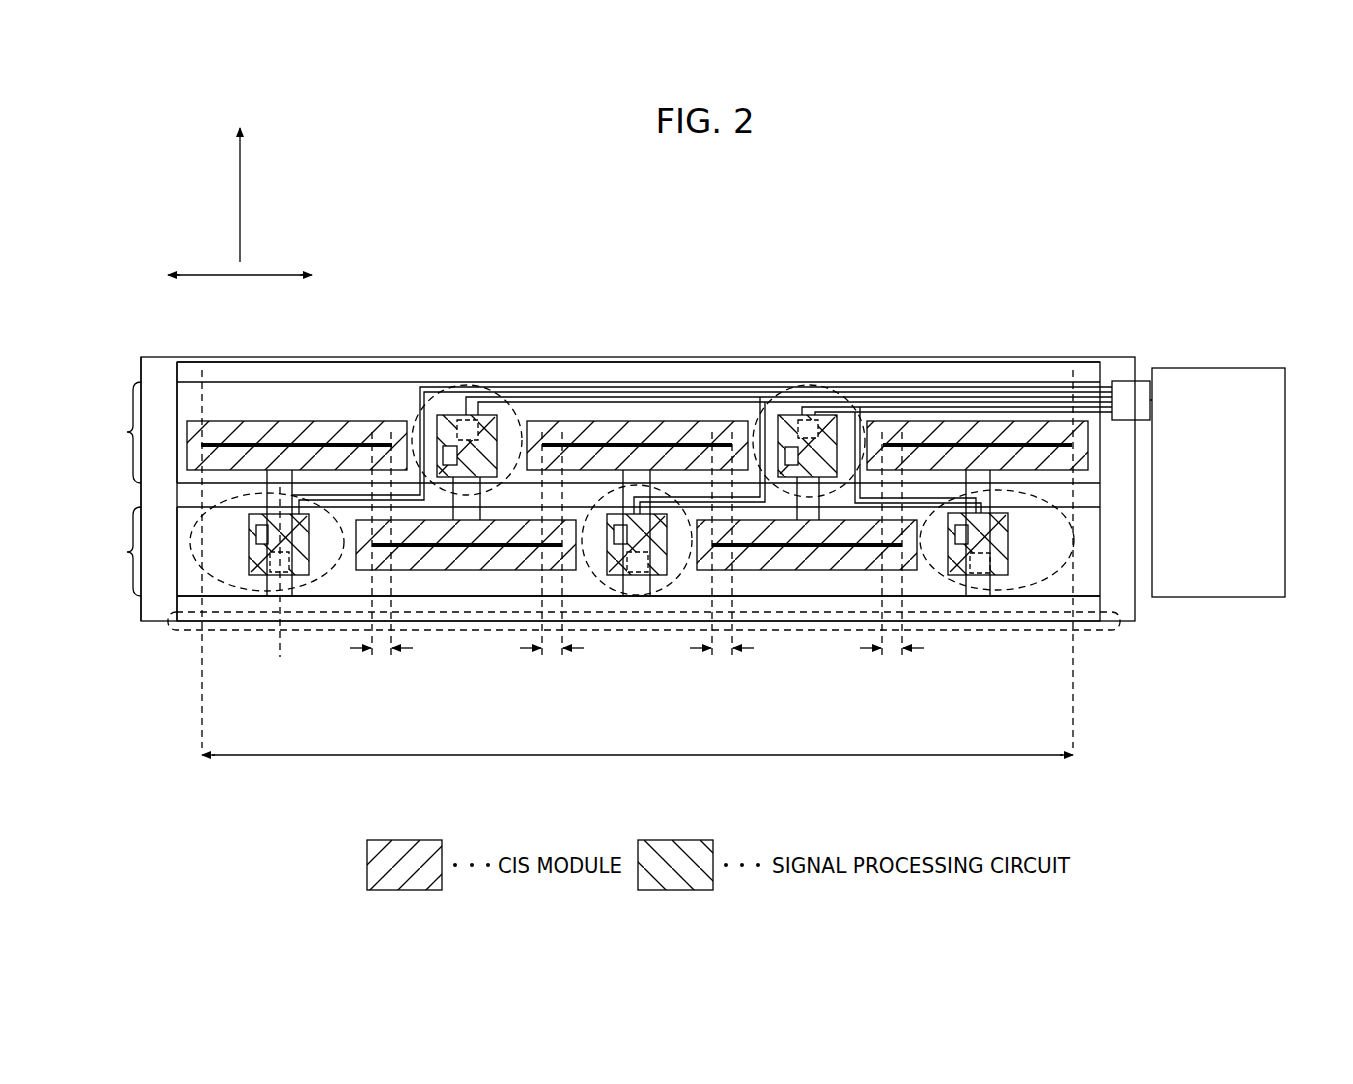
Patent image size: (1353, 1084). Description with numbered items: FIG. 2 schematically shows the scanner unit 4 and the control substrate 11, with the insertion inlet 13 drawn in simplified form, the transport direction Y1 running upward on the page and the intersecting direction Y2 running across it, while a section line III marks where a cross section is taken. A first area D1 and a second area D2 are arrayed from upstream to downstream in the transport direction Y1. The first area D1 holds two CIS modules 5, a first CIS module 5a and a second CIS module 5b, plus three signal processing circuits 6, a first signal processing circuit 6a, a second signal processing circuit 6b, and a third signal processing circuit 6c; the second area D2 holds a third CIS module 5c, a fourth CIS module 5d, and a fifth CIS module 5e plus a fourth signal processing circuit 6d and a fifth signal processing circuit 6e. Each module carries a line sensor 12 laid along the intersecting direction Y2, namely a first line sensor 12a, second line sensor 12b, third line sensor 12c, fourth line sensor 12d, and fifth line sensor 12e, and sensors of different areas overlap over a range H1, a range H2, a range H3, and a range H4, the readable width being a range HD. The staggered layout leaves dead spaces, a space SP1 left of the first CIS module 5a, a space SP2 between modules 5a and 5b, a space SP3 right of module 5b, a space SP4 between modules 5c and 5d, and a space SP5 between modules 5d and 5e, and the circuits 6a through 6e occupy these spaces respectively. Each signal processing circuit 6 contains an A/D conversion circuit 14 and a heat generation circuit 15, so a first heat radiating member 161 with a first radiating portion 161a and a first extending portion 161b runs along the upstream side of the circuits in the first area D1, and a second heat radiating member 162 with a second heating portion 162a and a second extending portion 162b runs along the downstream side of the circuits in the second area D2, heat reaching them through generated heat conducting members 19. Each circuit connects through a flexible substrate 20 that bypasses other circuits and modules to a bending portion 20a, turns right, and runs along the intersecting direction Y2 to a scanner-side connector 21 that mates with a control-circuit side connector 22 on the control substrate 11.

The scanner unit 4 is at (1070, 327).
The CIS module 5 is at (637, 497).
The first CIS module 5a is at (450, 570).
The second CIS module 5b is at (778, 570).
The third CIS module 5c is at (283, 420).
The fourth CIS module 5d is at (627, 420).
The fifth CIS module 5e is at (967, 420).
The signal processing circuit 6 is at (606, 489).
The first signal processing circuit 6a is at (248, 572).
The second signal processing circuit 6b is at (640, 578).
The third signal processing circuit 6c is at (976, 578).
The fourth signal processing circuit 6d is at (452, 415).
The fifth signal processing circuit 6e is at (800, 418).
The control substrate 11 is at (1210, 598).
The line sensor 12 is at (636, 525).
The first line sensor 12a is at (487, 548).
The second line sensor 12b is at (820, 548).
The third line sensor 12c is at (362, 445).
The fourth line sensor 12d is at (592, 445).
The fifth line sensor 12e is at (935, 445).
The insertion inlet 13 is at (1098, 632).
The A/D conversion circuit 14 is at (256, 530).
The heat generation circuit 15 is at (271, 562).
The generated heat conducting member 19 is at (289, 580).
The flexible substrate 20 is at (1015, 390).
The bending portion 20a is at (464, 405).
The scanner-side connector 21 is at (1127, 390).
The control-circuit side connector 22 is at (1143, 400).
The first heat radiating member 161 is at (173, 591).
The first radiating portion 161a is at (193, 607).
The first extending portion 161b is at (190, 570).
The second heat radiating member 162 is at (174, 406).
The second heating portion 162a is at (232, 365).
The second extending portion 162b is at (182, 430).
The space SP1 is at (318, 577).
The space SP2 is at (612, 592).
The space SP3 is at (1038, 592).
The space SP4 is at (537, 395).
The space SP5 is at (866, 400).
The range H1 is at (381, 555).
The range H2 is at (552, 555).
The range H3 is at (722, 555).
The range H4 is at (892, 555).
The range HD is at (637, 578).
The first area D1 is at (118, 551).
The second area D2 is at (118, 432).
The transport direction Y1 is at (241, 162).
The intersecting direction Y2 is at (288, 273).
The section line III is at (234, 488).